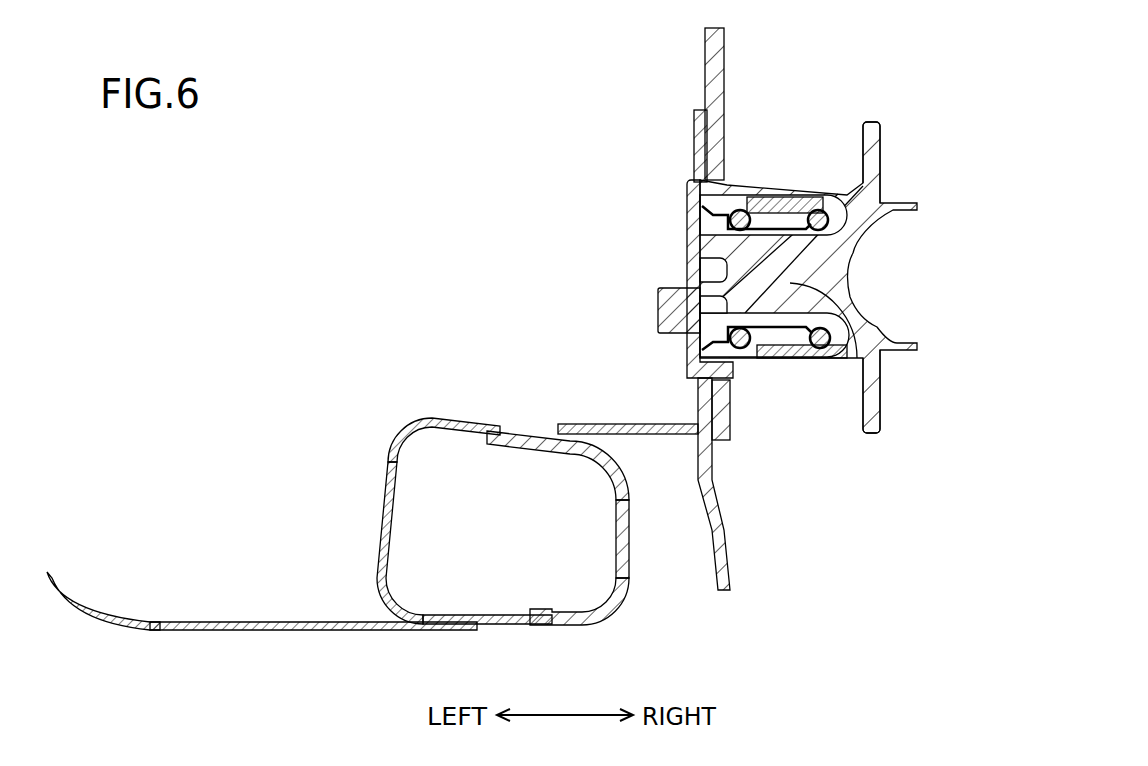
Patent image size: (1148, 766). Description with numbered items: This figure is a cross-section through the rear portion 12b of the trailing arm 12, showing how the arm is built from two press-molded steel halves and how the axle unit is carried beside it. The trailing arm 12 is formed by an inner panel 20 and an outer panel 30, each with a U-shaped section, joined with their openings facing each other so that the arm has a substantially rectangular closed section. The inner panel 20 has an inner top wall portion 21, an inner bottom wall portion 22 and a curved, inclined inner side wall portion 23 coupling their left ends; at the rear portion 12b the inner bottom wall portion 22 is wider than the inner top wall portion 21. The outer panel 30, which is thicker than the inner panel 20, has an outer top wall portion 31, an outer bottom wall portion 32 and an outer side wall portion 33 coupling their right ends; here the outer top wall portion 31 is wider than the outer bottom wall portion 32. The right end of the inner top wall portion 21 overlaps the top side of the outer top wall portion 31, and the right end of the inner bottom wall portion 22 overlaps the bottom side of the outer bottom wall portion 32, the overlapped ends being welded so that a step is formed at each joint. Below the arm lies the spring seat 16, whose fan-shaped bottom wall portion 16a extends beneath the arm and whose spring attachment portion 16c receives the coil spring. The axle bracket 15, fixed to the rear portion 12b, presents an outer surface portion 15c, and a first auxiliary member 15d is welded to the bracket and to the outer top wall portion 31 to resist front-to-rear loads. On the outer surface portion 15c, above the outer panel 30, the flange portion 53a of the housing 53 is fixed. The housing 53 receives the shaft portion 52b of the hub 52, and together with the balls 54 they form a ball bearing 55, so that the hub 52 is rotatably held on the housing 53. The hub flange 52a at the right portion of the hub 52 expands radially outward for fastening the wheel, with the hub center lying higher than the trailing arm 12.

The trailing arm 12 is at (491, 509).
The rear portion of the trailing arm 12b is at (491, 509).
The axle bracket 15 is at (644, 347).
The outer surface portion 15c is at (696, 129).
The first auxiliary member 15d is at (665, 424).
The spring seat 16 is at (260, 644).
The bottom wall portion 16a is at (310, 631).
The spring attachment portion 16c is at (80, 607).
The inner panel 20 is at (414, 524).
The inner top wall portion 21 is at (452, 418).
The inner bottom wall portion 22 is at (520, 628).
The inner side wall portion 23 is at (383, 495).
The outer panel 30 is at (596, 527).
The outer top wall portion 31 is at (520, 431).
The outer bottom wall portion 32 is at (565, 627).
The outer side wall portion 33 is at (622, 522).
The hub 52 is at (831, 303).
The hub flange 52a is at (876, 152).
The shaft portion 52b is at (853, 360).
The housing 53 is at (790, 360).
The flange portion 53a is at (717, 51).
The balls 54 is at (734, 432).
The ball bearing 55 is at (810, 281).